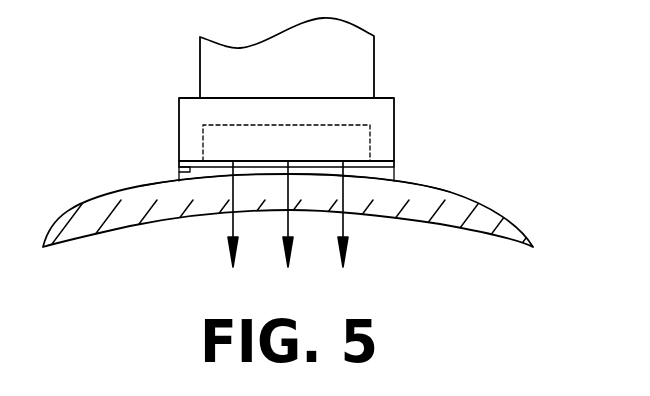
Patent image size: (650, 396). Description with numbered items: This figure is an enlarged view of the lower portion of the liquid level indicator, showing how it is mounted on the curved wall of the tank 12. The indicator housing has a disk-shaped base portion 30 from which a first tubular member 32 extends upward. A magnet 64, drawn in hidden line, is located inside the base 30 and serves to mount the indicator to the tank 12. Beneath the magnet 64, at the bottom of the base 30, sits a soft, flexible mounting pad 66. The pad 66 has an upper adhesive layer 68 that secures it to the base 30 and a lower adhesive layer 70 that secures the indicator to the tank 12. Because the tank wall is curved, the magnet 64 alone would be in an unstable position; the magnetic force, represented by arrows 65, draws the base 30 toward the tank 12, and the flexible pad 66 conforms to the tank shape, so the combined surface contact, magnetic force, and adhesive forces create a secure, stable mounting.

The tank 12 is at (98, 194).
The base portion 30 is at (382, 98).
The first tubular member 32 is at (200, 75).
The magnet 64 is at (355, 143).
The arrows 65 is at (288, 248).
The mounting pad 66 is at (390, 168).
The upper adhesive layer 68 is at (180, 177).
The lower adhesive layer 70 is at (396, 179).